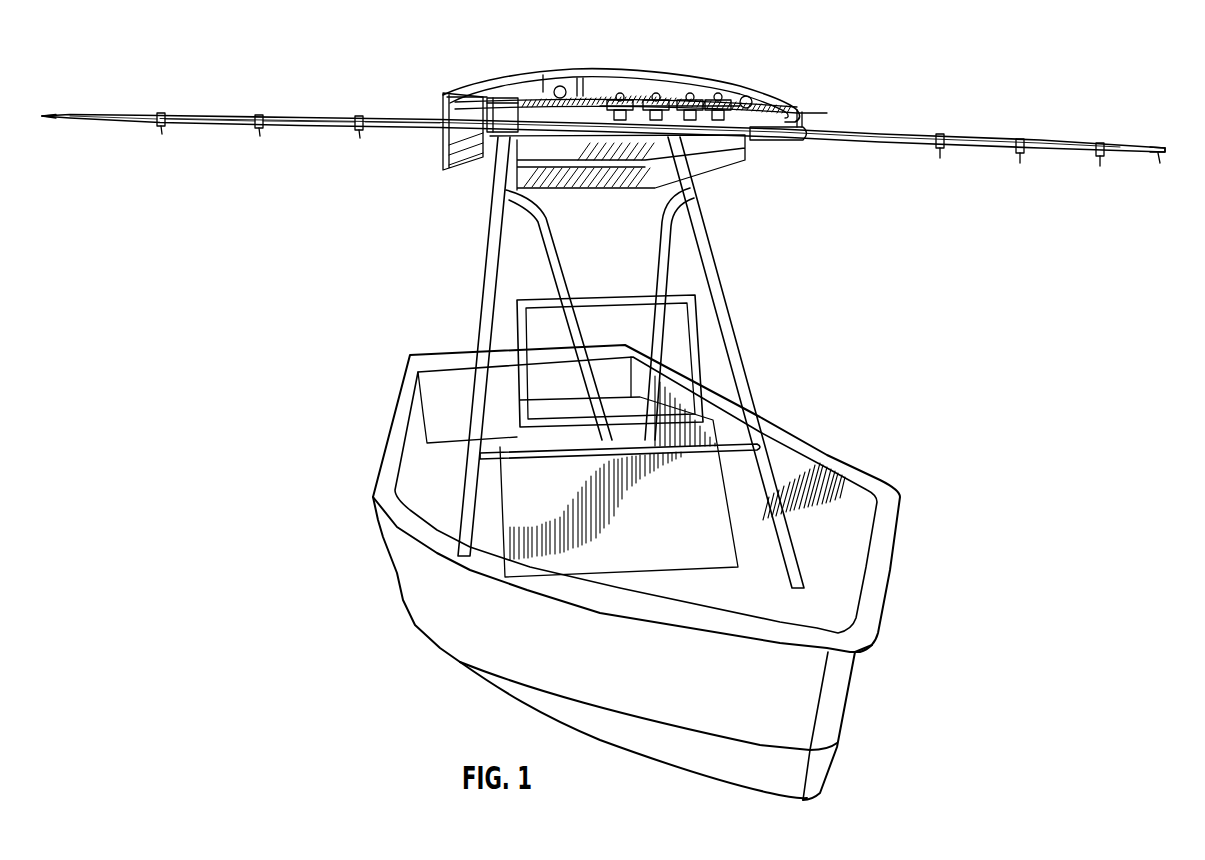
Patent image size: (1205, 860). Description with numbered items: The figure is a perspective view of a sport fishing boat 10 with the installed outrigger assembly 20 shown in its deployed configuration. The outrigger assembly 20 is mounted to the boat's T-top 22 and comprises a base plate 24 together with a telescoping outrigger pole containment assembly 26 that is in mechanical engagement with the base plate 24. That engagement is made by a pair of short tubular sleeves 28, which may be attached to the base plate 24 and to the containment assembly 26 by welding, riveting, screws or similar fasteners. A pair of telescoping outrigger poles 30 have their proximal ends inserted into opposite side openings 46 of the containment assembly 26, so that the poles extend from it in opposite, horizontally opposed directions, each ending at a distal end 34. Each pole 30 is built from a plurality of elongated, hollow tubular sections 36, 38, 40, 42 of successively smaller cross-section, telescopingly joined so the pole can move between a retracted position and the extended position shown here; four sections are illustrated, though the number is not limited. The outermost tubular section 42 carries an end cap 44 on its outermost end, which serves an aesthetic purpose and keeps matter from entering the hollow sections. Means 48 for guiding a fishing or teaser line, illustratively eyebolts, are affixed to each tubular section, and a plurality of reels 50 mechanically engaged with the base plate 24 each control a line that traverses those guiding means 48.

The sport fishing boat 10 is at (457, 697).
The outrigger assembly 20 is at (777, 153).
The T-top 22 is at (557, 62).
The base plate 24 is at (500, 93).
The telescoping outrigger pole containment assembly 26 is at (580, 87).
The short tubular sleeves 28 is at (457, 92).
The telescoping outrigger poles 30 is at (302, 175).
The distal end 34 is at (1163, 160).
The tubular section 36 is at (382, 117).
The tubular section 38 is at (293, 113).
The tubular section 40 is at (212, 113).
The outermost tubular section 42 is at (122, 115).
The end cap 44 is at (58, 120).
The opposite side openings 46 is at (450, 173).
The means for guiding a fishing or teaser line 48 is at (77, 120).
The reels 50 is at (620, 80).